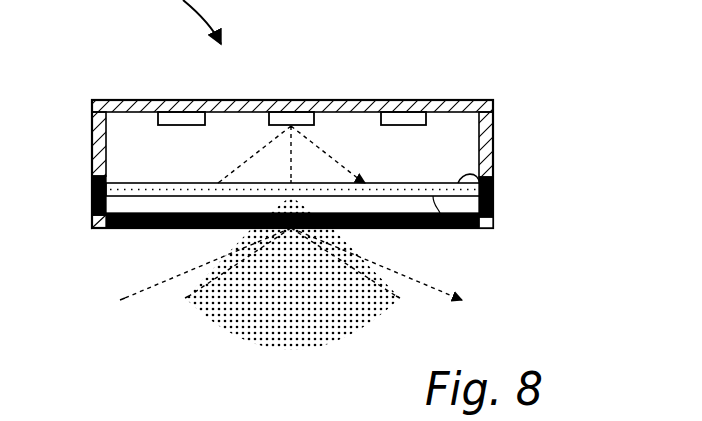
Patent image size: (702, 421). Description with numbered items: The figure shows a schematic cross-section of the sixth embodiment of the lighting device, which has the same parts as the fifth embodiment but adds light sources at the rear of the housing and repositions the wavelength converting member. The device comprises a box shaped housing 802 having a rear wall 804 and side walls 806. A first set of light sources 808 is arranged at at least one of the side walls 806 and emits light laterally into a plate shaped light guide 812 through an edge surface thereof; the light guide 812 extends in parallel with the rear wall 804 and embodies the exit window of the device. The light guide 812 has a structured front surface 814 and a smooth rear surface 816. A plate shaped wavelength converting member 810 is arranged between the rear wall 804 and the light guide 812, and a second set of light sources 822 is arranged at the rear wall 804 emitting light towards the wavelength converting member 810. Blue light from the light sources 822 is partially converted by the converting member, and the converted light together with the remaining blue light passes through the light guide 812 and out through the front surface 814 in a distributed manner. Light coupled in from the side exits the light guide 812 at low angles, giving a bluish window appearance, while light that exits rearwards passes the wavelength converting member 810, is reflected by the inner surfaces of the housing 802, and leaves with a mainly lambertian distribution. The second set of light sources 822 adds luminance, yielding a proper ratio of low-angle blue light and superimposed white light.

The housing 802 is at (332, 87).
The rear wall 804 is at (267, 108).
The side walls 806 is at (92, 133).
The first set of light sources 808 is at (102, 228).
The wavelength converting member 810 is at (92, 186).
The light guide 812 is at (150, 228).
The front surface 814 is at (442, 228).
The rear surface 816 is at (493, 184).
The second set of light sources 822 is at (165, 112).